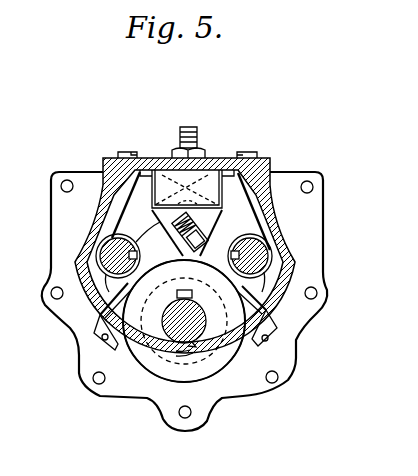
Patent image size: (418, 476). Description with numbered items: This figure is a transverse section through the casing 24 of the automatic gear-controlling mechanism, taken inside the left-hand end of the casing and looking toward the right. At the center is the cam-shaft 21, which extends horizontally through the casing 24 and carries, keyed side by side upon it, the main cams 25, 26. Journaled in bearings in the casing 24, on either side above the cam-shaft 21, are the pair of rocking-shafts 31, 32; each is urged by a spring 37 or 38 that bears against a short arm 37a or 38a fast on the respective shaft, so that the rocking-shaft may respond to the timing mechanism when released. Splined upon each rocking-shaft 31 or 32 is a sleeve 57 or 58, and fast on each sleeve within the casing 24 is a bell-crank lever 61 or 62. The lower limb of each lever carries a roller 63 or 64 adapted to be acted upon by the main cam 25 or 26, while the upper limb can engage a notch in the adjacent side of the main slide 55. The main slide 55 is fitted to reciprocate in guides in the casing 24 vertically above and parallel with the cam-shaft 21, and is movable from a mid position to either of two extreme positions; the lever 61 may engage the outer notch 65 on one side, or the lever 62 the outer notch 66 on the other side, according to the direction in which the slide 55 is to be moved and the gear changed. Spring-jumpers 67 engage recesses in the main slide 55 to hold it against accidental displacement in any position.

The cam-shaft 21 is at (168, 341).
The casing 24 is at (242, 386).
The main cam 25 is at (131, 353).
The main cam 26 is at (136, 330).
The rocking-shaft 31 is at (268, 248).
The rocking-shaft 32 is at (108, 252).
The spring 37 is at (299, 313).
The short arm 37a is at (265, 277).
The spring 38 is at (85, 312).
The short arm 38a is at (110, 280).
The main slide 55 is at (185, 177).
The sleeve 57 is at (262, 232).
The sleeve 58 is at (116, 236).
The bell-crank lever 61 is at (241, 207).
The bell-crank lever 62 is at (134, 212).
The roller 63 is at (209, 249).
The roller 64 is at (155, 247).
The notch 65 is at (207, 175).
The notch 66 is at (167, 173).
The spring-jumpers 67 is at (198, 137).